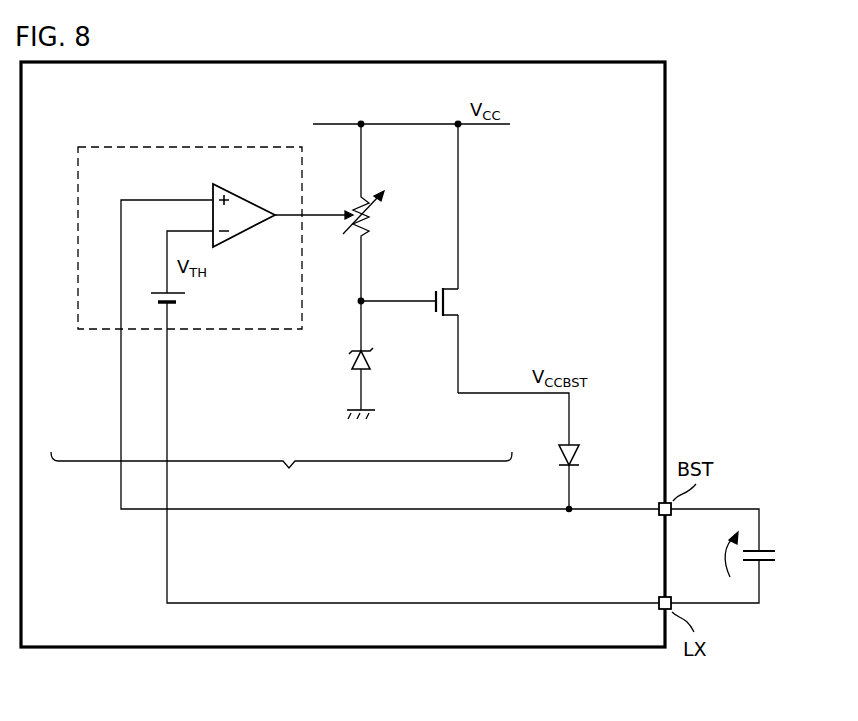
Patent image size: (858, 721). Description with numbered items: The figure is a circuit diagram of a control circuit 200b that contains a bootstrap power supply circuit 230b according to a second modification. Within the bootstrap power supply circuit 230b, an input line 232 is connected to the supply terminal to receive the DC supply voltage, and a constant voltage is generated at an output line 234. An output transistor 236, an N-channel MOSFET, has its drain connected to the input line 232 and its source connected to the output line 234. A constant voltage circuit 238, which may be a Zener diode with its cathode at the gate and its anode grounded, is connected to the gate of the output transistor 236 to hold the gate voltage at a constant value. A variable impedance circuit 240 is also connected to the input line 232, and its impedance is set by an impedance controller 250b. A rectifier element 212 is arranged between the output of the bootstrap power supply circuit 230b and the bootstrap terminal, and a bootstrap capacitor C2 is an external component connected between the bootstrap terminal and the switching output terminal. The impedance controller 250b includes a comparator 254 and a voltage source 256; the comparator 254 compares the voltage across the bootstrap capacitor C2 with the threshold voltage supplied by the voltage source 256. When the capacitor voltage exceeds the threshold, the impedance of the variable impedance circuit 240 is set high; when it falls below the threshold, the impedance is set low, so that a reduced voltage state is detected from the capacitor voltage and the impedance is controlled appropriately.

The control circuit 200b is at (268, 649).
The impedance controller 250b is at (96, 330).
The comparator 254 is at (264, 181).
The voltage source 256 is at (188, 295).
The input line 232 is at (410, 122).
The variable impedance circuit 240 is at (375, 218).
The constant voltage circuit 238 is at (345, 360).
The output transistor 236 is at (462, 302).
The output line 234 is at (498, 395).
The rectifier element 212 is at (584, 456).
The bootstrap power supply circuit 230b is at (281, 474).
The bootstrap capacitor C2 is at (779, 556).